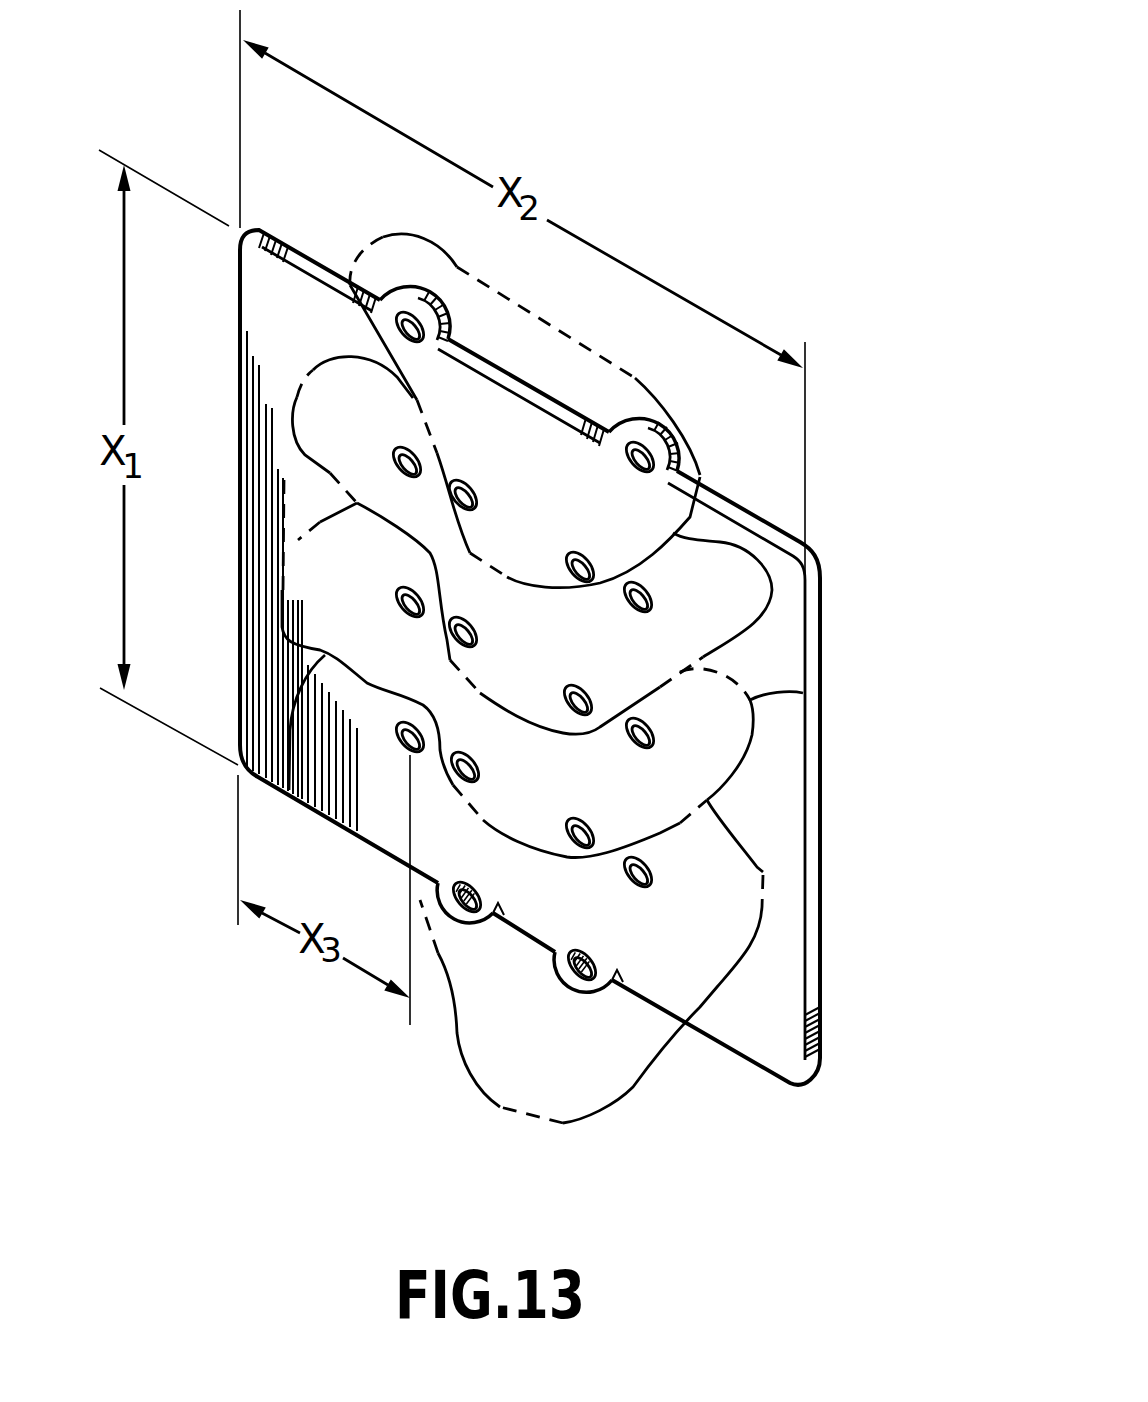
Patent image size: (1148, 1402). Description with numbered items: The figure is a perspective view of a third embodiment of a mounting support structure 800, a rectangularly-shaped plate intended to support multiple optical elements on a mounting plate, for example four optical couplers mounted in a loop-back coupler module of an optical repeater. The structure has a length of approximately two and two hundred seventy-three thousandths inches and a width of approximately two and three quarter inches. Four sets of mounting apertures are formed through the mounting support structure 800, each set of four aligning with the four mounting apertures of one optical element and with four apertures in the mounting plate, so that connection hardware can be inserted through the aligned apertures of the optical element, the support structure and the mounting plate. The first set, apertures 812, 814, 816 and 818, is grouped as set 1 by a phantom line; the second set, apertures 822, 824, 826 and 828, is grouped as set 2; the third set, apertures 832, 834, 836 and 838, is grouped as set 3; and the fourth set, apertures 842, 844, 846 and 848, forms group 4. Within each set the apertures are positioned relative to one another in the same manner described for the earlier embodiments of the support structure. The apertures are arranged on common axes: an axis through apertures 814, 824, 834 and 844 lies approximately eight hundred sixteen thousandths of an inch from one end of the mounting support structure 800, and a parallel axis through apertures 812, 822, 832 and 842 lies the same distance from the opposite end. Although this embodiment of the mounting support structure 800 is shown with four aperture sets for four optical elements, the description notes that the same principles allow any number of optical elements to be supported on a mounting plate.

The mounting support structure 800 is at (820, 968).
The mounting aperture 812 is at (677, 447).
The mounting aperture 814 is at (412, 317).
The mounting aperture 816 is at (470, 480).
The mounting aperture 818 is at (591, 570).
The mounting aperture 822 is at (648, 590).
The mounting aperture 824 is at (399, 455).
The mounting aperture 826 is at (473, 623).
The mounting aperture 828 is at (590, 707).
The mounting aperture 832 is at (648, 728).
The mounting aperture 834 is at (400, 610).
The mounting aperture 836 is at (473, 760).
The mounting aperture 838 is at (590, 833).
The mounting aperture 842 is at (634, 882).
The mounting aperture 844 is at (406, 750).
The mounting aperture 846 is at (474, 930).
The mounting aperture 848 is at (580, 997).
The set 1 is at (700, 477).
The set 2 is at (806, 585).
The set 3 is at (820, 700).
The group 4 is at (803, 868).